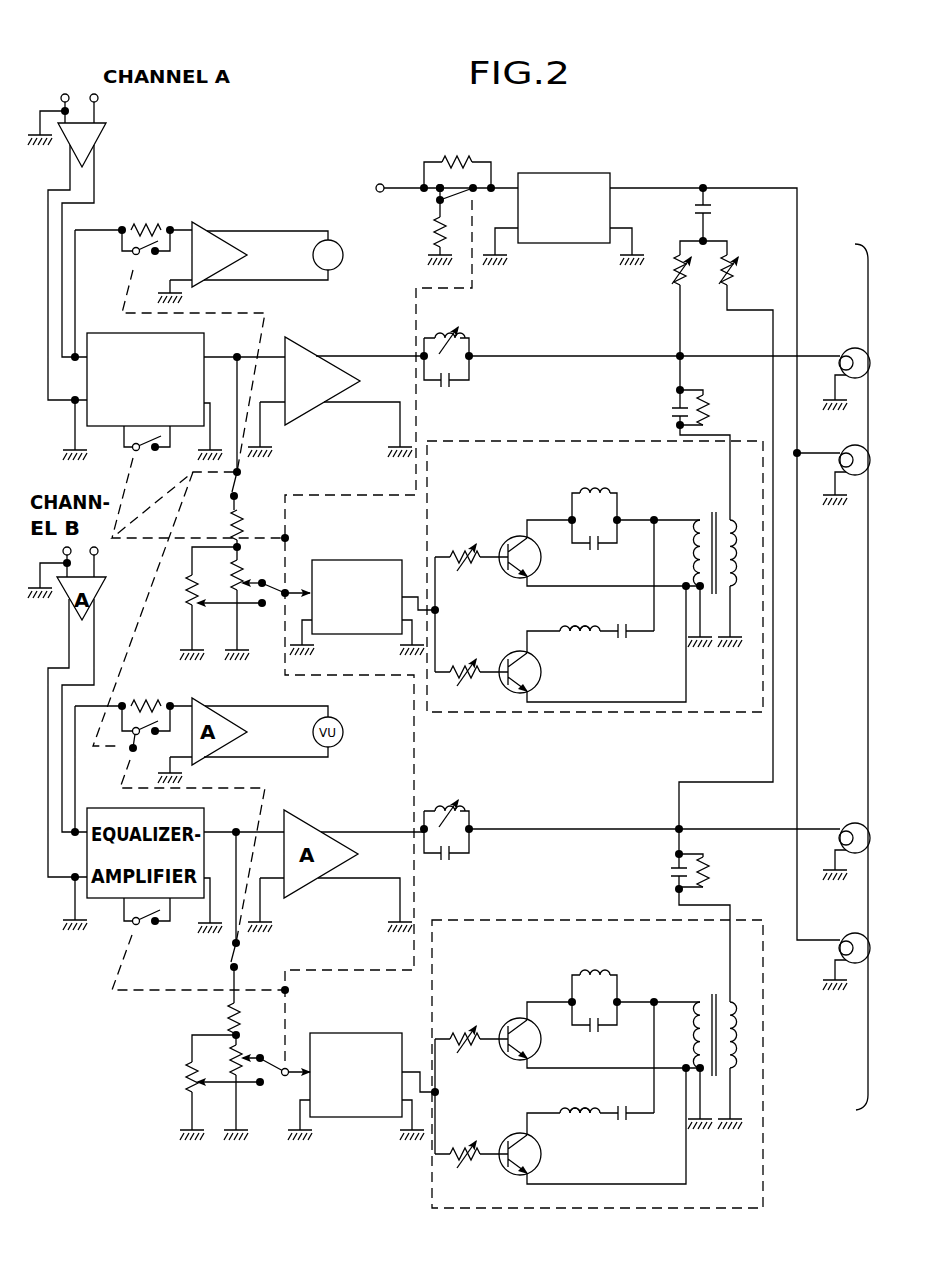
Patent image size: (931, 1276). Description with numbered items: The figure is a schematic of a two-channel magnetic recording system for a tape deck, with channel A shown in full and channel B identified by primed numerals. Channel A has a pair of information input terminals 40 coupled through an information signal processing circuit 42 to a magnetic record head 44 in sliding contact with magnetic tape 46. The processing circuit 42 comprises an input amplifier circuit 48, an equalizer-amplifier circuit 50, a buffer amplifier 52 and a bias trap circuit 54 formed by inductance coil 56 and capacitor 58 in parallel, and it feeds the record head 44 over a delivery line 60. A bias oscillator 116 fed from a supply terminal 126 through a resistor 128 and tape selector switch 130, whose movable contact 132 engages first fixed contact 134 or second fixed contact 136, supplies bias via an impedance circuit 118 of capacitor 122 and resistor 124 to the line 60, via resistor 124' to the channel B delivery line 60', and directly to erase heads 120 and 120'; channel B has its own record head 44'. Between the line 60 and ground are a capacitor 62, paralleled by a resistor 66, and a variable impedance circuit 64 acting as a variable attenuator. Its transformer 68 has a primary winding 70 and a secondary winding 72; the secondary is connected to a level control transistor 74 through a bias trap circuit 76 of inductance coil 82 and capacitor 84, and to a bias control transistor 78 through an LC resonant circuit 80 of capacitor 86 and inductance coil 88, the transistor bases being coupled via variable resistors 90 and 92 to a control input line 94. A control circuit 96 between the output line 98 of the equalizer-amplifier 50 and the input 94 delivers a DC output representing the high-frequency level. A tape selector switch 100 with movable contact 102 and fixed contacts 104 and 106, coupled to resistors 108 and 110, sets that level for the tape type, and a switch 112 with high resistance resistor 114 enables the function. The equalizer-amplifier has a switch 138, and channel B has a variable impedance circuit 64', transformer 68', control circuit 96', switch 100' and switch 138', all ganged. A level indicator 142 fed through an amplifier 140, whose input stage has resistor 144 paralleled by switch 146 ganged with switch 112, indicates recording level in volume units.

The information input terminals 40 is at (74, 93).
The information signal processing circuit 42 is at (354, 320).
The magnetic record head 44 is at (846, 362).
The magnetic record head 44' is at (846, 832).
The magnetic tape 46 is at (865, 269).
The input amplifier circuit 48 is at (101, 141).
The equalizer-amplifier circuit 50 is at (99, 333).
The buffer amplifier 52 is at (312, 352).
The bias trap circuit 54 is at (468, 335).
The inductance coil 56 is at (438, 334).
The capacitor 58 is at (453, 386).
The delivery line 60 is at (654, 338).
The delivery line 60' is at (654, 808).
The capacitor 62 is at (677, 404).
The variable impedance circuit 64 is at (595, 558).
The variable impedance circuit 64' is at (597, 1044).
The resistor 66 is at (705, 410).
The transformer 68 is at (704, 527).
The transformer 68' is at (712, 1008).
The primary winding 70 is at (737, 574).
The secondary winding 72 is at (697, 550).
The level control transistor 74 is at (505, 535).
The bias trap circuit 76 is at (612, 492).
The bias control transistor 78 is at (506, 650).
The LC resonant circuit 80 is at (600, 648).
The inductance coil 82 is at (587, 479).
The capacitor 84 is at (598, 548).
The capacitor 86 is at (627, 625).
The inductance coil 88 is at (580, 613).
The variable resistor 90 is at (466, 548).
The variable resistor 92 is at (470, 659).
The control input line 94 is at (415, 590).
The control circuit 96 is at (357, 590).
The control circuit 96' is at (361, 1067).
The output line 98 is at (268, 347).
The tape selector switch 100 is at (295, 563).
The tape selector switch 100' is at (279, 1042).
The movable contact 102 is at (280, 616).
The fixed contact 104 is at (258, 568).
The fixed contact 106 is at (262, 606).
The resistor 108 is at (235, 583).
The resistor 110 is at (185, 598).
The switch 112 is at (243, 485).
The high resistance resistor 114 is at (243, 528).
The bias oscillator 116 is at (589, 173).
The impedance circuit 118 is at (682, 230).
The erase head 120 is at (833, 463).
The erase head 120' is at (841, 947).
The capacitor 122 is at (708, 210).
The resistor 124 is at (662, 282).
The resistor 124' is at (748, 275).
The supply terminal 126 is at (380, 184).
The resistor 128 is at (453, 158).
The tape selector switch 130 is at (464, 198).
The movable contact 132 is at (438, 203).
The first fixed contact 134 is at (437, 229).
The second fixed contact 136 is at (437, 192).
The switch 138 is at (147, 457).
The switch 138' is at (149, 930).
The amplifier 140 is at (198, 221).
The level indicator 142 is at (313, 256).
The resistor 144 is at (140, 222).
The switch 146 is at (145, 259).